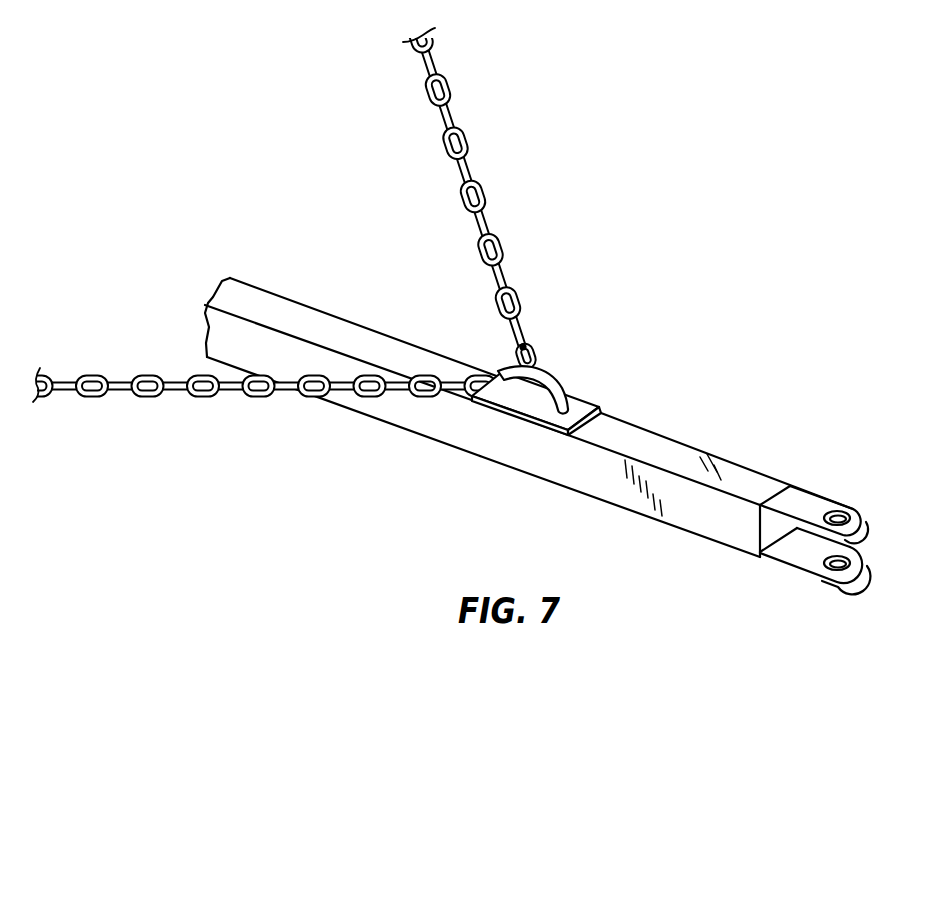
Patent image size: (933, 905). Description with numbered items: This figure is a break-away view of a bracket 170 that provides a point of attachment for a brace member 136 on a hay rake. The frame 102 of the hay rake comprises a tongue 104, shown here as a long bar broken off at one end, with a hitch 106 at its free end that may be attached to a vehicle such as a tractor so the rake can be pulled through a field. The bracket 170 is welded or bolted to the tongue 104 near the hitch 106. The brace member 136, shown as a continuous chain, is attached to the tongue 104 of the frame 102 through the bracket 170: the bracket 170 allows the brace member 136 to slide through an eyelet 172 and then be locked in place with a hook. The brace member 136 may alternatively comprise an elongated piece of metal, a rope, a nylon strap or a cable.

The frame 102 is at (300, 318).
The tongue 104 is at (648, 442).
The hitch 106 is at (817, 501).
The brace member 136 is at (488, 195).
The bracket 170 is at (576, 402).
The eyelet 172 is at (553, 373).